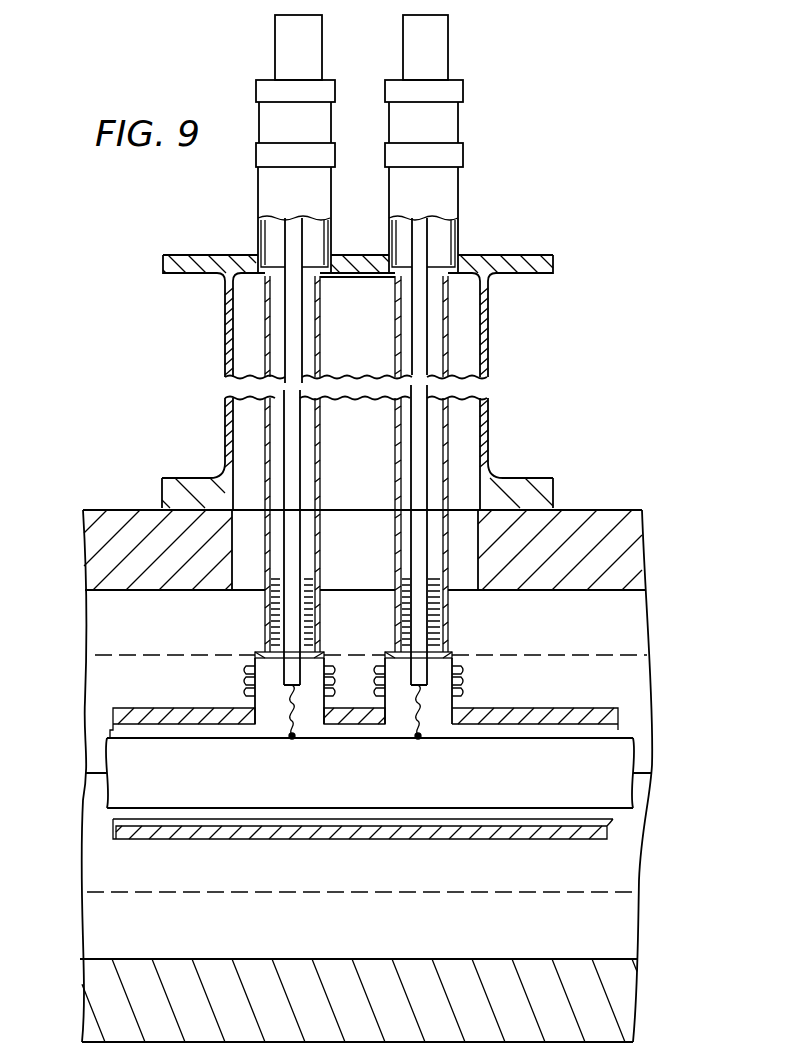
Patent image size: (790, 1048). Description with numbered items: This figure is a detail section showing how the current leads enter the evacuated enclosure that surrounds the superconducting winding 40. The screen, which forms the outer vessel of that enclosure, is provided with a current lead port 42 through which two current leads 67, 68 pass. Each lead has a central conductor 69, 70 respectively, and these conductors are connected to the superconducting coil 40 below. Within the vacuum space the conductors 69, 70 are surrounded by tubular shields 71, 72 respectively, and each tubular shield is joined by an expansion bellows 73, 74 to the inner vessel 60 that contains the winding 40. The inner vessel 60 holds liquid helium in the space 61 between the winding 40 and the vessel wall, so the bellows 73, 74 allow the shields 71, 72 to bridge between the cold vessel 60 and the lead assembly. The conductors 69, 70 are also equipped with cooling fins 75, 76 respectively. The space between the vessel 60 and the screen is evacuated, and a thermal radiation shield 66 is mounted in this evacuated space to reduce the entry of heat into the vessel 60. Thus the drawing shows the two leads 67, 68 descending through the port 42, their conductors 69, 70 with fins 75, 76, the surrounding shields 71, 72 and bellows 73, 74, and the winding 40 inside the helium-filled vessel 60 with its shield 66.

The super-conducting winding 40 is at (372, 791).
The current lead port 42 is at (498, 394).
The inner vessel 60 is at (590, 703).
The space 61 is at (574, 822).
The thermal radiation shield 66 is at (468, 896).
The current lead 67 is at (264, 118).
The current lead 68 is at (452, 118).
The central conductor 69 is at (288, 322).
The central conductor 70 is at (425, 333).
The tubular shield 71 is at (266, 434).
The tubular shield 72 is at (448, 447).
The expansion bellows 73 is at (248, 676).
The expansion bellows 74 is at (464, 686).
The cooling fins 75 is at (275, 618).
The cooling fins 76 is at (432, 614).